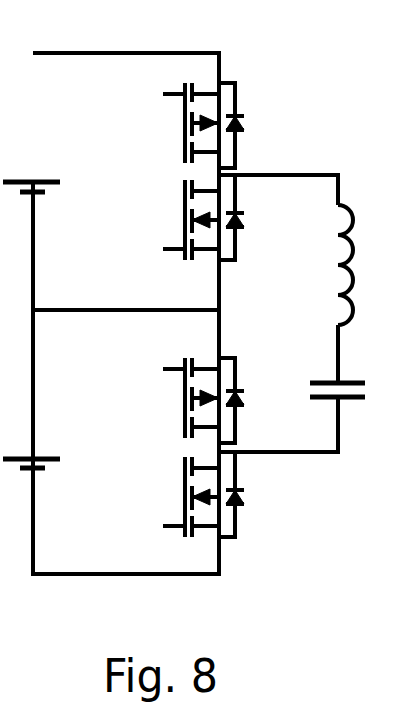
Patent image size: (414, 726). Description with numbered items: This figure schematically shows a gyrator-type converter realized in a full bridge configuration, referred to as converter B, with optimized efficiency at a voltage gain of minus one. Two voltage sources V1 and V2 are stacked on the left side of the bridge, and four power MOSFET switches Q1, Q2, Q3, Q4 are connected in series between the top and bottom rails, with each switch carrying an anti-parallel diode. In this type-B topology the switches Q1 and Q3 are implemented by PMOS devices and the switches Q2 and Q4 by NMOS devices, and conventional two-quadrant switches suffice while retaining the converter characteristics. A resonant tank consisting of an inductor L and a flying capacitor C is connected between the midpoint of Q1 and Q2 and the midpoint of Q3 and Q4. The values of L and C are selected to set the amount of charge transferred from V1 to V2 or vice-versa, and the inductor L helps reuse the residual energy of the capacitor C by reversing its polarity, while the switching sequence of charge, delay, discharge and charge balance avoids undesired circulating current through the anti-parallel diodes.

The first voltage source V1 is at (46, 163).
The second voltage source V2 is at (41, 437).
The power MOSFET switch Q1 is at (185, 125).
The power MOSFET switch Q2 is at (185, 217).
The power MOSFET switch Q3 is at (185, 400).
The power MOSFET switch Q4 is at (185, 494).
The inductor L is at (326, 265).
The capacitor C is at (334, 364).